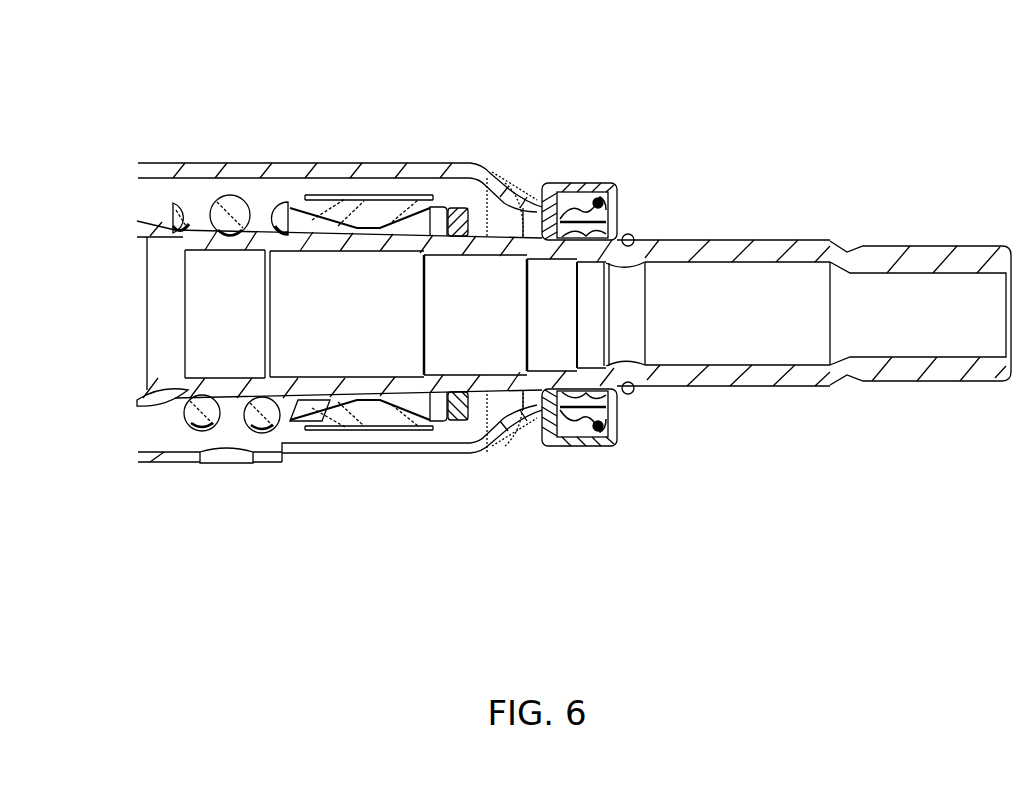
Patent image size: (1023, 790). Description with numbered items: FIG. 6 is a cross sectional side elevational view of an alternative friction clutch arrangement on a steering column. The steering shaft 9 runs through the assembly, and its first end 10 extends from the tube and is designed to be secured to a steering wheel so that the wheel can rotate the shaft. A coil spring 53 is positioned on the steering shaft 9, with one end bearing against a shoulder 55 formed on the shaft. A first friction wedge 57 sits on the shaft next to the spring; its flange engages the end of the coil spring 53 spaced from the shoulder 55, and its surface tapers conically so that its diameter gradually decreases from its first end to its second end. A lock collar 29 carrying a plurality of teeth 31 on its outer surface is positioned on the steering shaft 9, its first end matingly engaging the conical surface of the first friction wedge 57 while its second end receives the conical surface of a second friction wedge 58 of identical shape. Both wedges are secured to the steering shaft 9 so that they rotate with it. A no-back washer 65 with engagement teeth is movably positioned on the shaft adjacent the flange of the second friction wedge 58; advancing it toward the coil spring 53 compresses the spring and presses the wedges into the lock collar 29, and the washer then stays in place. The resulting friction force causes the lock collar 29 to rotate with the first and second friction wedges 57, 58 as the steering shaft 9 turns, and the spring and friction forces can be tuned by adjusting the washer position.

The steering shaft 9 is at (725, 240).
The first end 10 is at (933, 381).
The lock collar 29 is at (358, 228).
The teeth 31 is at (373, 435).
The coil spring 53 is at (232, 215).
The shoulder 55 is at (162, 332).
The first friction wedge 57 is at (283, 230).
The second friction wedge 58 is at (438, 232).
The no-back washer 65 is at (462, 420).